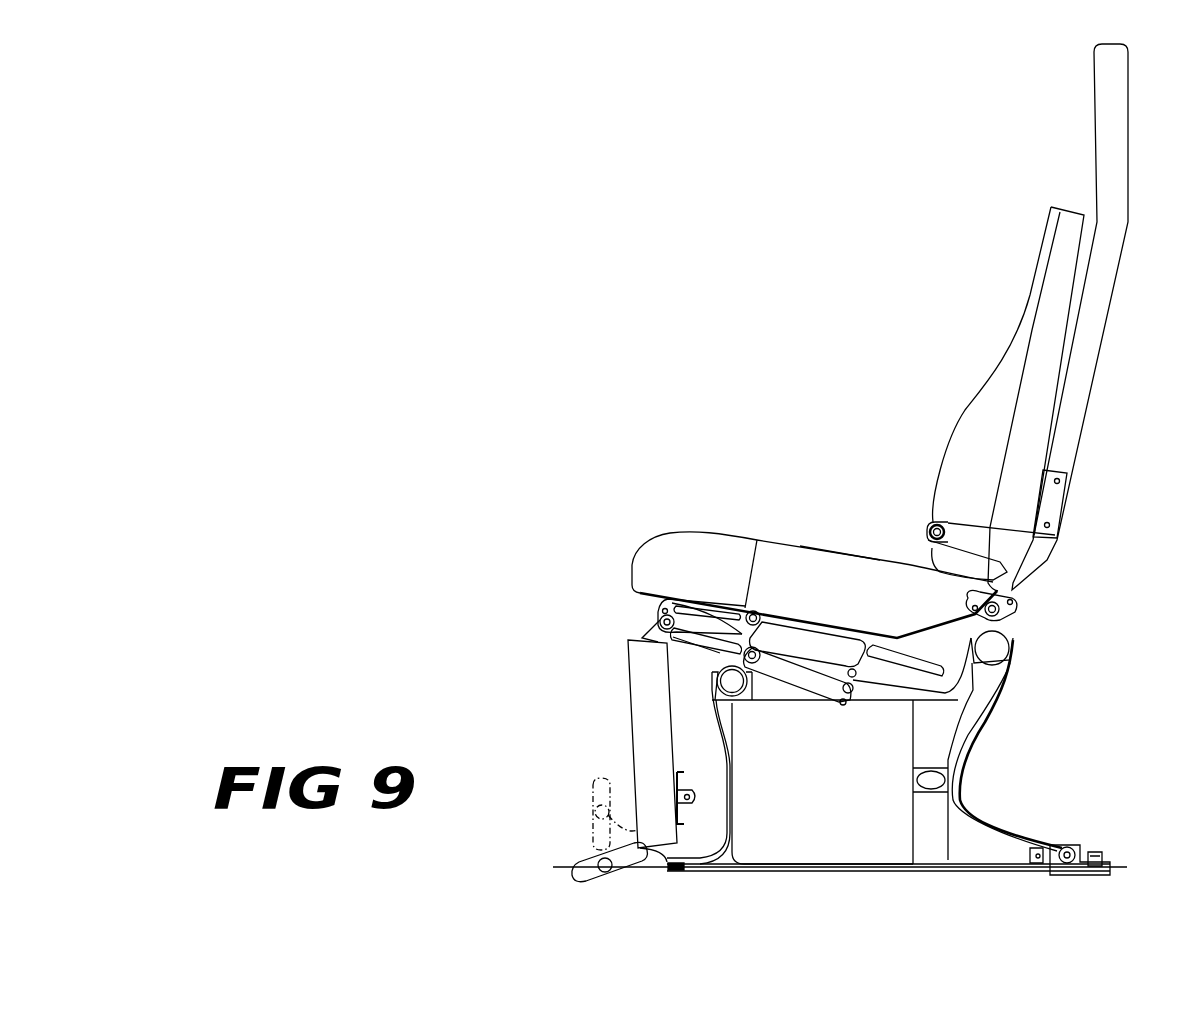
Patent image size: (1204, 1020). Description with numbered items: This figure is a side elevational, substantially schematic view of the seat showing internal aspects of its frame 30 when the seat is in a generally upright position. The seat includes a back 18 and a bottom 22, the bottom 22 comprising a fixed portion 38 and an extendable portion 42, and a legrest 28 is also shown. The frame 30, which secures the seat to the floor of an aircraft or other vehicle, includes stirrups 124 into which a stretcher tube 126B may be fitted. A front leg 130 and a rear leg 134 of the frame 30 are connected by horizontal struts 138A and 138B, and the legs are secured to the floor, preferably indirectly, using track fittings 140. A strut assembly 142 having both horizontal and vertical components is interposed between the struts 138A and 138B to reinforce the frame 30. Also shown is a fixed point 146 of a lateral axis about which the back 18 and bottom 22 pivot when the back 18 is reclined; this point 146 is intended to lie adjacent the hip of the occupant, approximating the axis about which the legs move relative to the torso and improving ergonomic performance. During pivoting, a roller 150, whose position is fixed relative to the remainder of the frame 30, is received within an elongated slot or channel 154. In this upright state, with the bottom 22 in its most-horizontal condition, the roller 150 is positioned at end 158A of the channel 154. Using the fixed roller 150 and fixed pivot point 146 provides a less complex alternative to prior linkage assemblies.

The back 18 is at (1093, 403).
The bottom 22 is at (802, 539).
The legrest 28 is at (598, 738).
The frame 30 is at (896, 751).
The fixed portion 38 is at (813, 550).
The extendable portion 42 is at (672, 537).
The stirrups 124 is at (713, 684).
The stretcher tube 126B is at (1003, 605).
The front leg 130 is at (727, 752).
The rear leg 134 is at (962, 755).
The horizontal strut 138A is at (773, 700).
The horizontal strut 138B is at (790, 863).
The track fittings 140 is at (680, 872).
The strut assembly 142 is at (885, 780).
The fixed point 146 is at (936, 525).
The roller 150 is at (660, 612).
The elongated slot or channel 154 is at (800, 647).
The end 158A is at (728, 640).